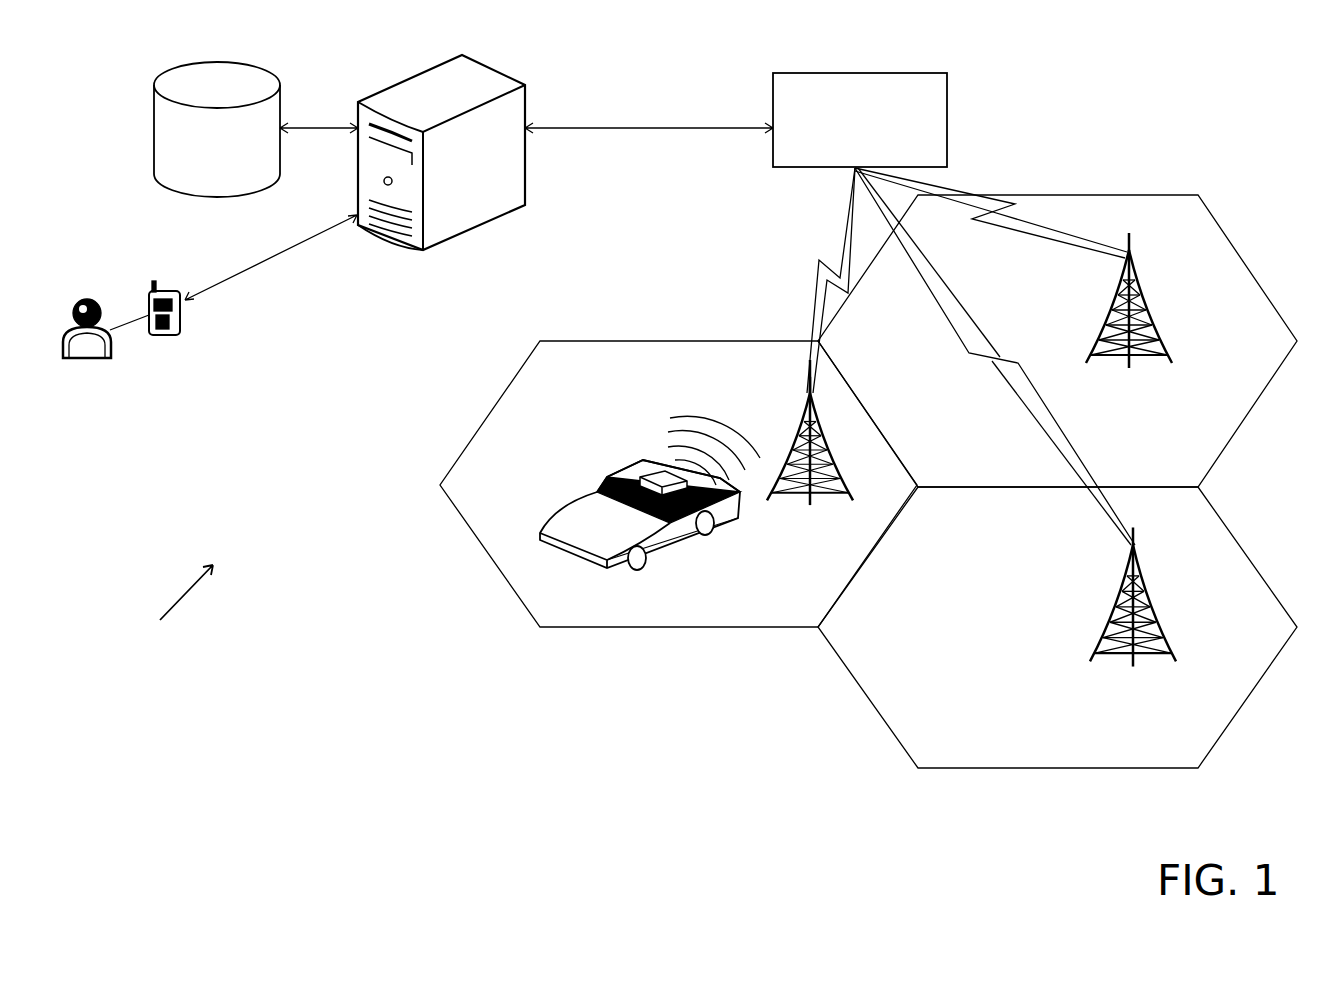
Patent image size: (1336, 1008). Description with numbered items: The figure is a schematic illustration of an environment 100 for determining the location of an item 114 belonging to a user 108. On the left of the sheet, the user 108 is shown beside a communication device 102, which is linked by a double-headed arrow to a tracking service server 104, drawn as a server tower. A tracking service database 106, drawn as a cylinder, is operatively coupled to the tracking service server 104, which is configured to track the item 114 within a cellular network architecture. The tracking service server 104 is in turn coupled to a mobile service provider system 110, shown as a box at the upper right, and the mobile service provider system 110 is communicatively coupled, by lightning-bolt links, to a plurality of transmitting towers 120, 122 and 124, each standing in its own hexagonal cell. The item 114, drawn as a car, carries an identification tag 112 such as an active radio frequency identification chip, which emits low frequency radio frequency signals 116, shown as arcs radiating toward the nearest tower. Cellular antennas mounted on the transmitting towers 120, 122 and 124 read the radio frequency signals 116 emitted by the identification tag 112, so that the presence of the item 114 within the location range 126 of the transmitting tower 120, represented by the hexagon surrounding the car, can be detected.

The environment 100 is at (172, 611).
The communication device 102 is at (158, 283).
The tracking service server 104 is at (527, 192).
The tracking service database 106 is at (270, 70).
The user 108 is at (95, 297).
The mobile service provider system 110 is at (947, 118).
The identification tag 112 is at (663, 473).
The item 114 is at (622, 563).
The radio frequency signals 116 is at (717, 418).
The transmitting tower 120 is at (842, 478).
The transmitting tower 122 is at (1138, 545).
The transmitting tower 124 is at (1145, 290).
The location range 126 is at (650, 628).